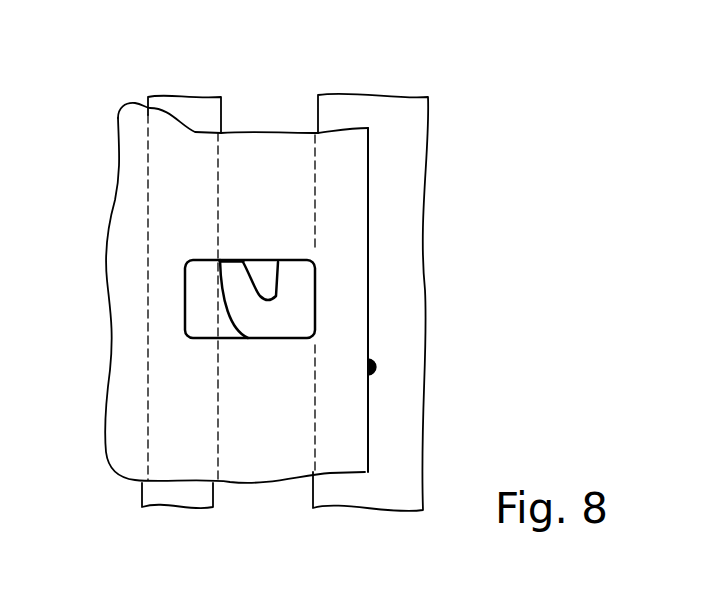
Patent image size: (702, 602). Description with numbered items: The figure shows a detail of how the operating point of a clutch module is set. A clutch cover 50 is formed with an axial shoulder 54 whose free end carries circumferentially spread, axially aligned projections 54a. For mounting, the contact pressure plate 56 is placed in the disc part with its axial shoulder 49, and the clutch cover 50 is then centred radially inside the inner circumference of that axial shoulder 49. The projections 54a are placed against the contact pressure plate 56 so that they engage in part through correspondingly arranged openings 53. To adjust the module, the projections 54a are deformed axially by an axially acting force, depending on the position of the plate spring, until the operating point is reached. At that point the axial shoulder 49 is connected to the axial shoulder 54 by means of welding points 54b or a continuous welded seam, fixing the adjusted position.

The axial shoulder 49 is at (123, 450).
The clutch cover 50 is at (440, 268).
The openings 53 is at (262, 273).
The axial shoulder 54 is at (400, 163).
The projections 54a is at (265, 318).
The welding points 54b is at (374, 367).
The contact pressure plate 56 is at (192, 107).